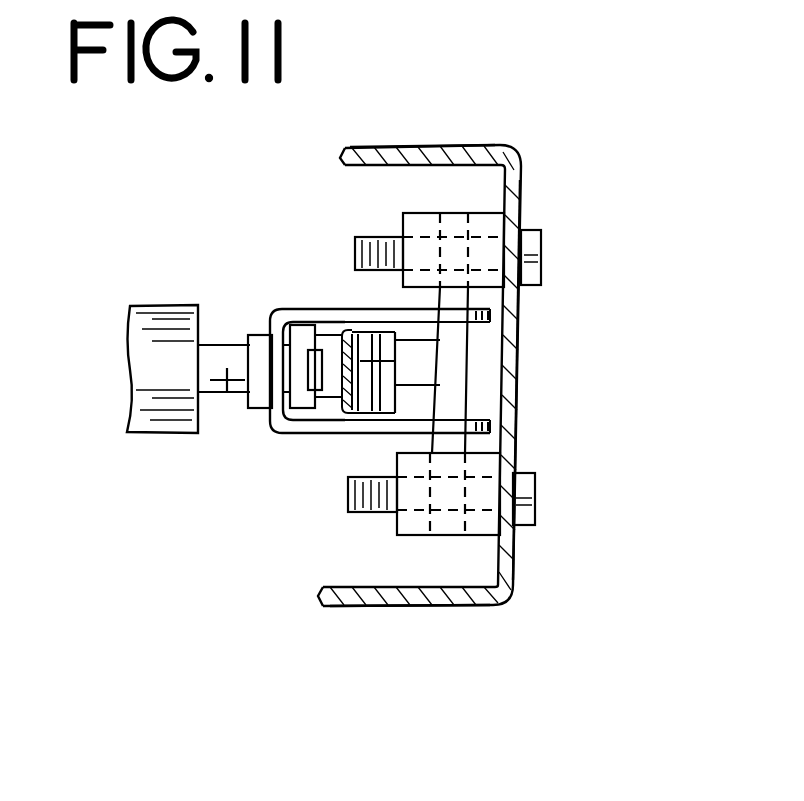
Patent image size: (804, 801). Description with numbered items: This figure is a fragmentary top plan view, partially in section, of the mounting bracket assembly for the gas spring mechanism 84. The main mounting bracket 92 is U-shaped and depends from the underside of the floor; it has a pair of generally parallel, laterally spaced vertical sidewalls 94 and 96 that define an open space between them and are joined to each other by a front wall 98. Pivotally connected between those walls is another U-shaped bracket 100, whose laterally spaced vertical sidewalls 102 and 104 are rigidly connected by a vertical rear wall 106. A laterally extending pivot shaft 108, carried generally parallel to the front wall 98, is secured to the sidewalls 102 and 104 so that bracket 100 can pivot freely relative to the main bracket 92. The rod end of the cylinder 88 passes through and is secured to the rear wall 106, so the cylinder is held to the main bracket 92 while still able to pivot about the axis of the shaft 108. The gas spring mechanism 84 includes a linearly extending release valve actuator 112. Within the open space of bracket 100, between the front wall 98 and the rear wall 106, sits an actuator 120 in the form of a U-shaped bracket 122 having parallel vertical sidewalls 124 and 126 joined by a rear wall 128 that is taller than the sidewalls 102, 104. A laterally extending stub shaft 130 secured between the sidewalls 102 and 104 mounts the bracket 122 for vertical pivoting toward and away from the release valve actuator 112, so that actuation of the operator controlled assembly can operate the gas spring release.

The gas spring mechanism 84 is at (156, 335).
The cylinder 88 is at (160, 293).
The main mounting bracket 92 is at (481, 143).
The vertical sidewall 94 is at (396, 606).
The vertical sidewall 96 is at (380, 147).
The front wall 98 is at (513, 570).
The bracket 100 is at (404, 348).
The vertical sidewall 102 is at (412, 425).
The vertical sidewall 104 is at (486, 304).
The vertical rear wall 106 is at (277, 412).
The pivot shaft 108 is at (450, 436).
The release valve actuator 112 is at (325, 340).
The actuator 120 is at (343, 413).
The bracket 122 is at (350, 340).
The vertical sidewall 124 is at (395, 407).
The vertical sidewall 126 is at (400, 343).
The rear wall 128 is at (395, 361).
The stub shaft 130 is at (400, 383).